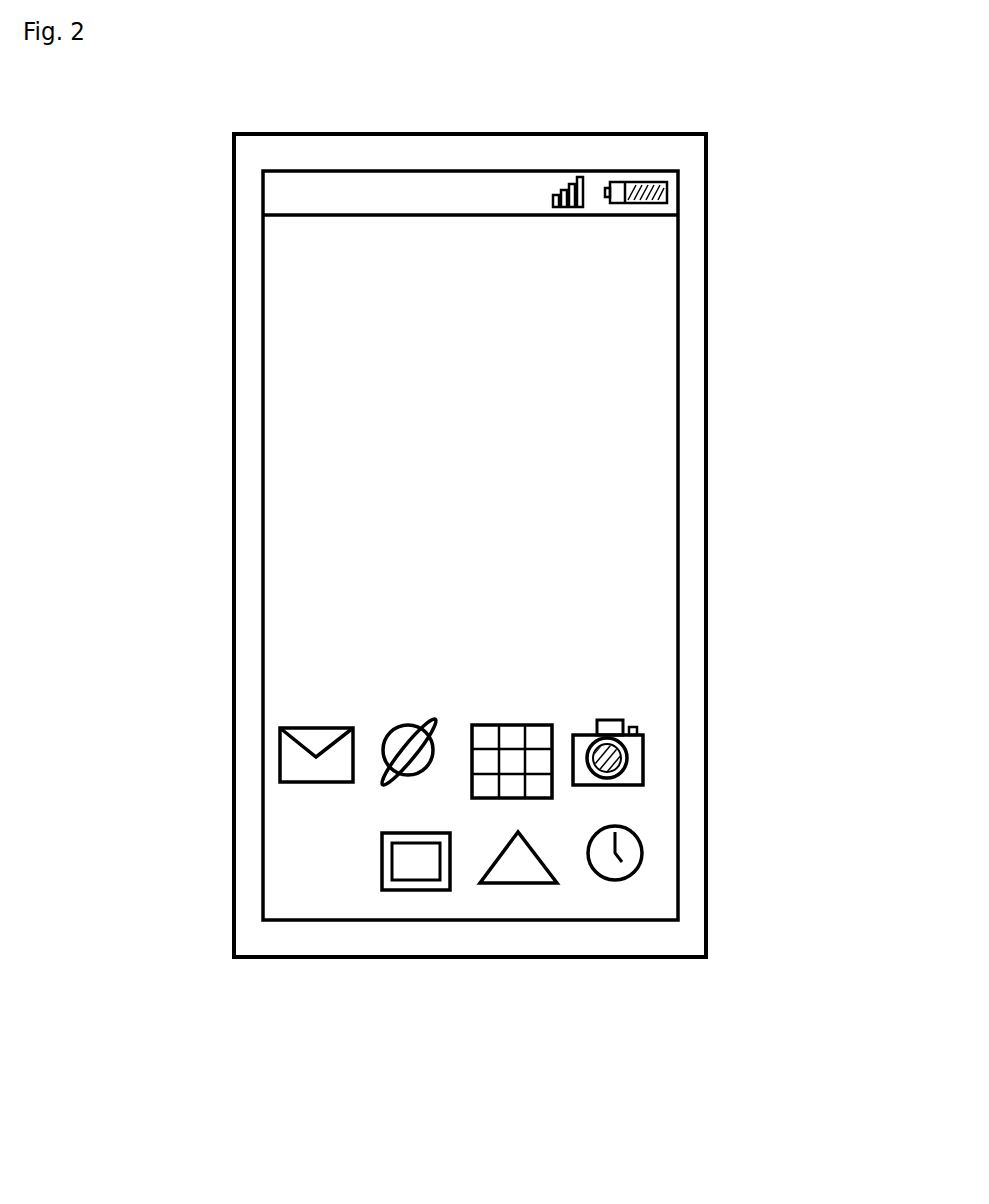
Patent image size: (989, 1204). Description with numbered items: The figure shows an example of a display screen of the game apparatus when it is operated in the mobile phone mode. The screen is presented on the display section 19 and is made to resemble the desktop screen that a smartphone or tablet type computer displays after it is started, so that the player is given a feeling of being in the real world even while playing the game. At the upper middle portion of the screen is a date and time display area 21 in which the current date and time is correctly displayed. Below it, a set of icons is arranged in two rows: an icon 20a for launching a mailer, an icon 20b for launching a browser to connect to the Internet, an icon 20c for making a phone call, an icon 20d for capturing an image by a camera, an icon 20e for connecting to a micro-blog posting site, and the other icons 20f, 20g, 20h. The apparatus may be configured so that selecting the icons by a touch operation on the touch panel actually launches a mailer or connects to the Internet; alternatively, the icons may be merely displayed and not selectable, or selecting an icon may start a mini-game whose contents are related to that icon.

The display section 19 is at (748, 407).
The date and time display area 21 is at (640, 333).
The icon for launching a mailer 20a is at (280, 750).
The icon for launching a browser 20b is at (412, 722).
The icon for making a phone call 20c is at (540, 722).
The icon for capturing an image by a camera 20d is at (643, 757).
The icon for connecting to a micro-blog posting site 20e is at (277, 855).
The other icon 20f is at (410, 890).
The other icon 20g is at (513, 885).
The other icon 20h is at (642, 852).